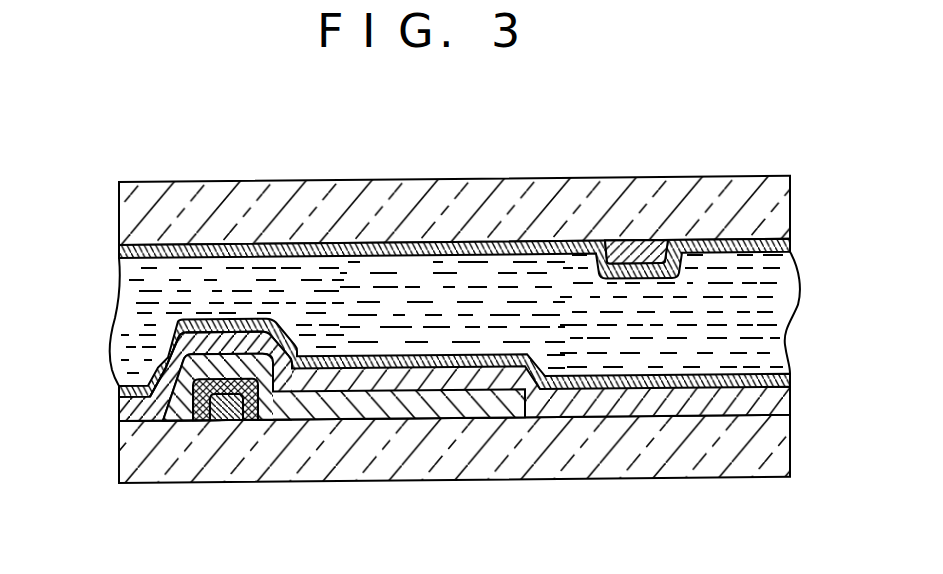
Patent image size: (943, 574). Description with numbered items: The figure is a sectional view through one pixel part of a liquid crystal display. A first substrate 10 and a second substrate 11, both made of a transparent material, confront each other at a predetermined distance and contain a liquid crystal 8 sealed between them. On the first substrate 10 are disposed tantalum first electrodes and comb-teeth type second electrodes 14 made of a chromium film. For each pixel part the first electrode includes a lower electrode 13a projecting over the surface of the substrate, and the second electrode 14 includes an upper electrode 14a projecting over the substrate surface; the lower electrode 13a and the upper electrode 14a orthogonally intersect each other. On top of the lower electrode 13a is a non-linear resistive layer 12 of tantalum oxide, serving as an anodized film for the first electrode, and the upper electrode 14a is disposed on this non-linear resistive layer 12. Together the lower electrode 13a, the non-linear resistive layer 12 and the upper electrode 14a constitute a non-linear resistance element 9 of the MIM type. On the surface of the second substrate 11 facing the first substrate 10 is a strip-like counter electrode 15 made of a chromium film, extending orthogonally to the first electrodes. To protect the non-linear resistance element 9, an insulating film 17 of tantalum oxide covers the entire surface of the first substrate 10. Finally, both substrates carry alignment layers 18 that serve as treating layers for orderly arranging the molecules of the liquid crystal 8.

The liquid crystal 8 is at (775, 302).
The non-linear resistance element 9 is at (228, 345).
The first substrate 10 is at (780, 445).
The second substrate 11 is at (778, 200).
The non-linear resistive layer 12 is at (253, 420).
The lower electrode 13a is at (224, 418).
The second electrode 14 is at (410, 404).
The upper electrode 14a is at (170, 348).
The counter electrode 15 is at (640, 247).
The insulating film 17 is at (783, 398).
The alignment layer 18 is at (780, 244).